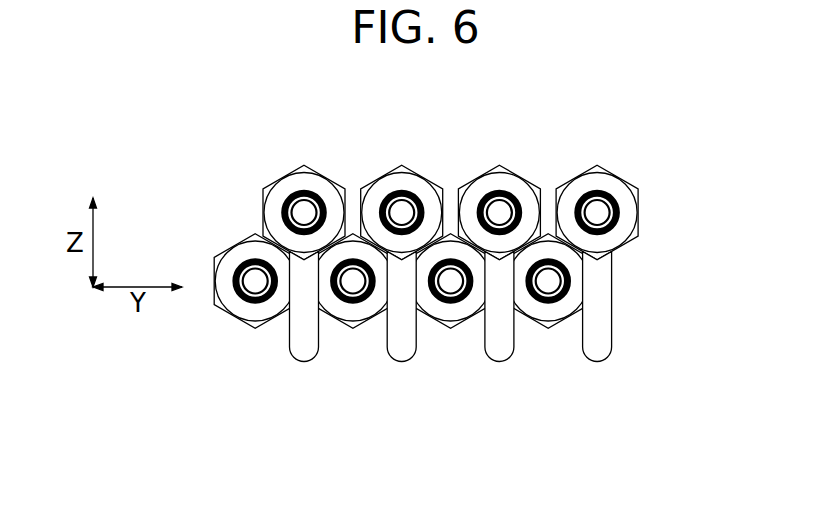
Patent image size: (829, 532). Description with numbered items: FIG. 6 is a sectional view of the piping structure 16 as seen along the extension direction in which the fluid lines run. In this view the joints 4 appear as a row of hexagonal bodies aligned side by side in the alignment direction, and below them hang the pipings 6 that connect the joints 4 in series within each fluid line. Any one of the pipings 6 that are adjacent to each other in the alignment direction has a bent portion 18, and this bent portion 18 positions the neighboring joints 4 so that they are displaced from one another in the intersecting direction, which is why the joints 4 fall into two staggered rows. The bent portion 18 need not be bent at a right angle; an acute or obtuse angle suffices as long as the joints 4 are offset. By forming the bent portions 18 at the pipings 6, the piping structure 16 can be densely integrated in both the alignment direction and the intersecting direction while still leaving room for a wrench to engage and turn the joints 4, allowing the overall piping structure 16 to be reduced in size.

The joint 4 is at (426, 262).
The piping 6 is at (474, 362).
The piping structure 16 is at (462, 267).
The bent portion 18 is at (474, 343).